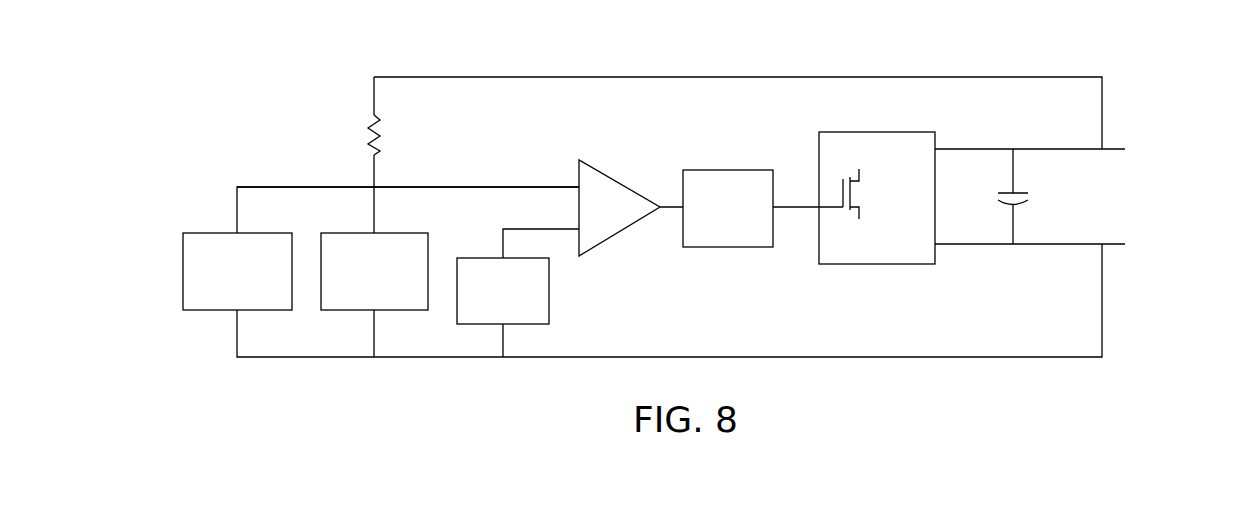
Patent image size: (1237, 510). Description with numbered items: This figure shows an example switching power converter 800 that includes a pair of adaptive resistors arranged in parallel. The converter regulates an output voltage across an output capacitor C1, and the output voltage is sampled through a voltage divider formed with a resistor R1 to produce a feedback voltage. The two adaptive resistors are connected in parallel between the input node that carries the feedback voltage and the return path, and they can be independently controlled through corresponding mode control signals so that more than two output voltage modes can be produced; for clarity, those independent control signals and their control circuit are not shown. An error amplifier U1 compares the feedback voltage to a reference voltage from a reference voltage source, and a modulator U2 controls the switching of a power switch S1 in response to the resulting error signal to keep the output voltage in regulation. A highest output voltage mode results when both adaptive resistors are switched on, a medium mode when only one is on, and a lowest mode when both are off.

The switching power converter 800 is at (684, 194).
The resistor R1 is at (388, 135).
The error amplifier U1 is at (631, 208).
The modulator U2 is at (763, 208).
The power switch S1 is at (863, 194).
The output capacitor C1 is at (1023, 196).